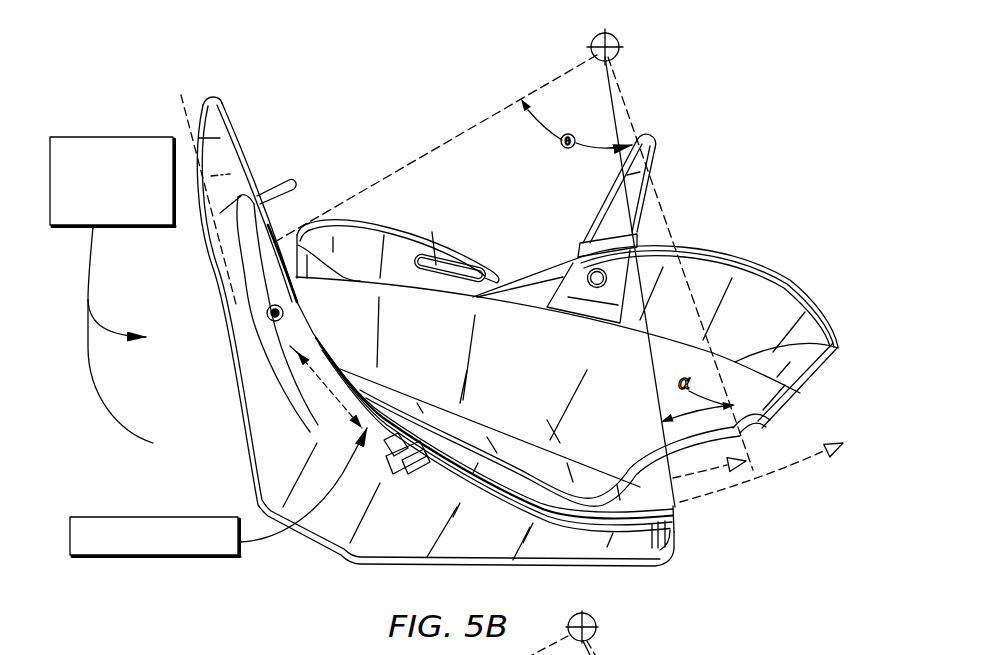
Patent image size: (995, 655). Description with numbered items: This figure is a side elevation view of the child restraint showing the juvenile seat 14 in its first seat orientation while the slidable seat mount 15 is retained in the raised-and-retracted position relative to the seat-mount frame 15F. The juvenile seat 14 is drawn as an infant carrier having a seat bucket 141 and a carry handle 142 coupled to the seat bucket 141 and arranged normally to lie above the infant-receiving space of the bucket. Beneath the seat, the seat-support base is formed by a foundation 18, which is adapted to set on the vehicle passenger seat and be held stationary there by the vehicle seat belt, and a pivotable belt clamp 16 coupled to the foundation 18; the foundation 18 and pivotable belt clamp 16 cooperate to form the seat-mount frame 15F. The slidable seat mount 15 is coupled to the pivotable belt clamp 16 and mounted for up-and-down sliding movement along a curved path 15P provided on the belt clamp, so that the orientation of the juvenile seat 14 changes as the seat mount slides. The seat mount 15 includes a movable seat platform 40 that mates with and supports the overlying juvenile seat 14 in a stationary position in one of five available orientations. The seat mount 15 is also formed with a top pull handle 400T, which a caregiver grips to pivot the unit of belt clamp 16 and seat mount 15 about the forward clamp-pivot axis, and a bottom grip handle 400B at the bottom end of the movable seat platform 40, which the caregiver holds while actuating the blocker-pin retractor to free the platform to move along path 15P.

The juvenile seat 14 is at (743, 252).
The slidable seat mount 15 is at (668, 516).
The seat-mount frame 15F is at (93, 137).
The path 15P is at (309, 398).
The pivotable belt clamp 16 is at (238, 290).
The foundation 18 is at (237, 430).
The movable seat platform 40 is at (70, 537).
The seat bucket 141 is at (800, 407).
The carry handle 142 is at (648, 138).
The top pull handle 400T is at (293, 181).
The bottom grip handle 400B is at (666, 523).